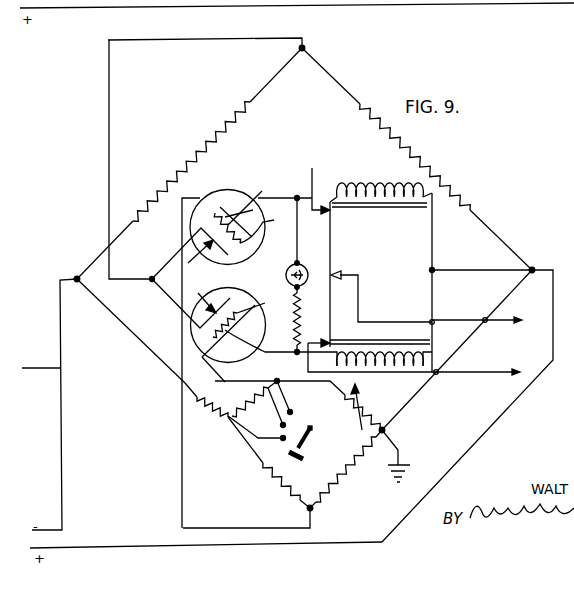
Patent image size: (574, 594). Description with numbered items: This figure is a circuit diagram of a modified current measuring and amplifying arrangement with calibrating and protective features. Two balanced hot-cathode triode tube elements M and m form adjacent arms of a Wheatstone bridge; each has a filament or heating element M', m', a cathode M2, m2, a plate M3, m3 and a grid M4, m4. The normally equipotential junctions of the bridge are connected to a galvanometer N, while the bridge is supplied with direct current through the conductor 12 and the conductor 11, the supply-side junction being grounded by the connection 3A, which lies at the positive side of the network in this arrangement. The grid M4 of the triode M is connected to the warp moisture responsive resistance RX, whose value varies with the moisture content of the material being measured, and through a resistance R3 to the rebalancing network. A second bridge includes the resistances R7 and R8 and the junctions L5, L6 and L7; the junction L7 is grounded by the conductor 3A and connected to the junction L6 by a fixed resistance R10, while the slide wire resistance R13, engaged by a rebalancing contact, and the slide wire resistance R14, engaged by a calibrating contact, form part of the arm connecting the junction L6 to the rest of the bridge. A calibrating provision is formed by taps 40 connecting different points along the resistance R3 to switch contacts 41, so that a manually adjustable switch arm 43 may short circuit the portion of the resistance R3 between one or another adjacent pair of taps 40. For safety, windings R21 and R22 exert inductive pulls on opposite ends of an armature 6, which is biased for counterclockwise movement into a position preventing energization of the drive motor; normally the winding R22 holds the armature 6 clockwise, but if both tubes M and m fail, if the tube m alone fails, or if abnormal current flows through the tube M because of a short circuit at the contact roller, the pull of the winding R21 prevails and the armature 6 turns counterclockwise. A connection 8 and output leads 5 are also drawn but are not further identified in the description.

The output lines 5 is at (490, 373).
The armature 6 is at (330, 245).
The wire 8 is at (312, 168).
The conductor 11 is at (32, 365).
The conductor 12 is at (165, 548).
The taps 40 is at (265, 415).
The switch contacts 41 is at (283, 425).
The manually adjustable switch arm 43 is at (312, 432).
The ground connection conductor 3A is at (398, 450).
The resistance R3 is at (248, 400).
The resistance R7 is at (213, 133).
The resistance R8 is at (438, 172).
The fixed resistance R10 is at (333, 490).
The slide wire resistance R13 is at (215, 430).
The slide wire resistance R14 is at (288, 483).
The winding R21 is at (410, 368).
The winding R22 is at (372, 184).
The warp moisture responsive resistance RX is at (365, 403).
The bridge junction L5 is at (302, 48).
The bridge junction L6 is at (310, 508).
The bridge junction L7 is at (77, 279).
The galvanometer N is at (297, 262).
The triode tube element M is at (228, 319).
The filament M' is at (176, 302).
The cathode M2 is at (200, 328).
The plate M3 is at (249, 331).
The grid M4 is at (249, 316).
The triode tube element m is at (227, 219).
The filament m' is at (200, 261).
The cathode m2 is at (201, 228).
The plate m3 is at (248, 206).
The grid m4 is at (252, 227).